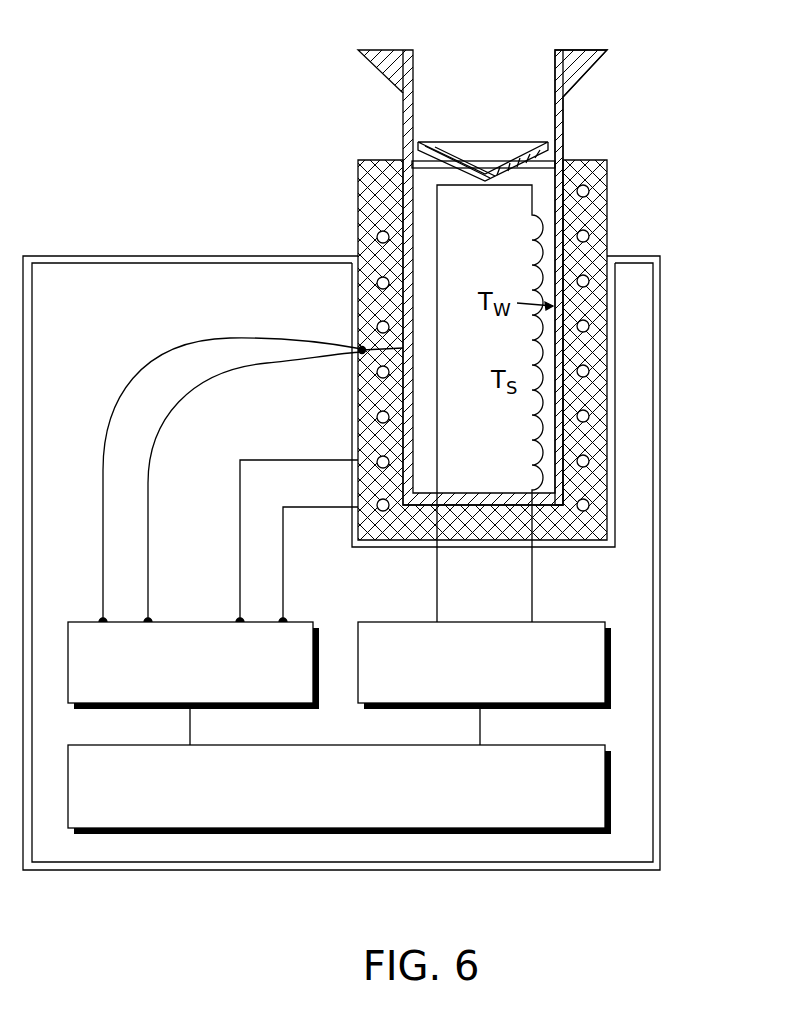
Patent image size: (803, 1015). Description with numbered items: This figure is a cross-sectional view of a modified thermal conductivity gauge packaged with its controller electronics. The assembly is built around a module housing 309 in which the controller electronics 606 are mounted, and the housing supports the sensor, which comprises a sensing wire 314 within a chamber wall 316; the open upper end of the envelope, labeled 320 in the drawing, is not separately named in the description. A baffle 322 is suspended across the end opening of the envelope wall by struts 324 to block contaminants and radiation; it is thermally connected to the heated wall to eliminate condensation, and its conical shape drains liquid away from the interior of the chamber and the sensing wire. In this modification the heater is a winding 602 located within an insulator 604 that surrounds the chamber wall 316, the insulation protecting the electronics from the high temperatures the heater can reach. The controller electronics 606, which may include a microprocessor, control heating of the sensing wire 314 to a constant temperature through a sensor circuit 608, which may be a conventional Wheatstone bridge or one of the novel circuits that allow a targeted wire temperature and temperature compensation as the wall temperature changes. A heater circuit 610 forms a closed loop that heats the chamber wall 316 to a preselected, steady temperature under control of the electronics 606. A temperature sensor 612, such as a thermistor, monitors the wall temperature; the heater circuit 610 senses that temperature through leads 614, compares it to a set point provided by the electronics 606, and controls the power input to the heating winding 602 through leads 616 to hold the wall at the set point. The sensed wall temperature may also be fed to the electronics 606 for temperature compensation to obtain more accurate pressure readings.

The module housing 309 is at (661, 517).
The sensing wire 314 is at (531, 441).
The chamber wall 316 is at (414, 61).
The outlet tube 320 is at (575, 52).
The baffle 322 is at (455, 152).
The struts 324 is at (430, 167).
The heating winding 602 is at (585, 320).
The insulator 604 is at (593, 390).
The controller electronics 606 is at (317, 814).
The sensor circuit 608 is at (459, 690).
The heater circuit 610 is at (168, 690).
The temperature sensor 612 is at (403, 348).
The leads 614 is at (168, 425).
The leads 616 is at (240, 575).